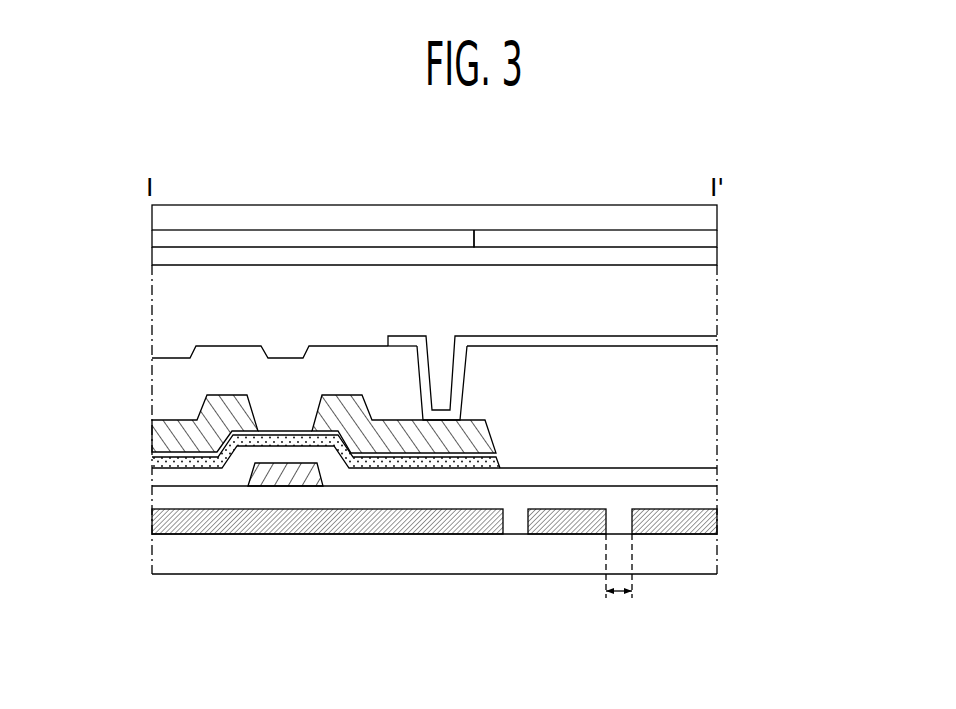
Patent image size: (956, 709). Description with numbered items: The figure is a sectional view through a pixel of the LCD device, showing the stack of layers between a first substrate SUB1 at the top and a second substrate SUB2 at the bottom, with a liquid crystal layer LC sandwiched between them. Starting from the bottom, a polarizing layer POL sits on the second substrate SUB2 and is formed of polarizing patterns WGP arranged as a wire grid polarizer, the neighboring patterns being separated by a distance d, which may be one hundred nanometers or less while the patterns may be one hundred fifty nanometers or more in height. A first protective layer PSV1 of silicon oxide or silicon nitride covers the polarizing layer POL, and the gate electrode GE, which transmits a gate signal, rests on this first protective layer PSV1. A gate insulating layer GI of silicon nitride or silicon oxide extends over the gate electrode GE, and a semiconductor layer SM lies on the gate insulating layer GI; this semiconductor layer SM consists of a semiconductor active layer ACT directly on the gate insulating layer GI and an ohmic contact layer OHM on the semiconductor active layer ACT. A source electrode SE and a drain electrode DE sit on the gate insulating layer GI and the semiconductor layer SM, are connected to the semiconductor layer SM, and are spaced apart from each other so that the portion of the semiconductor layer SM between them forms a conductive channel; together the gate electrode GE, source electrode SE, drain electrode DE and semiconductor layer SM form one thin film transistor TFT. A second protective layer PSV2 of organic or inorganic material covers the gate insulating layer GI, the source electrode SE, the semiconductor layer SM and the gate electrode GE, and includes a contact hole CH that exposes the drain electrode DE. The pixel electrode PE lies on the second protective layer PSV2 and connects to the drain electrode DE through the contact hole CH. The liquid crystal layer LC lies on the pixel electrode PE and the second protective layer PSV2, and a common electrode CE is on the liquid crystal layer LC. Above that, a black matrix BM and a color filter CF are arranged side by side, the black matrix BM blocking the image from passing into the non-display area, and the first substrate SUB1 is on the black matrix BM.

The first substrate SUB1 is at (152, 216).
The black matrix BM is at (152, 240).
The color filter CF is at (717, 239).
The common electrode CE is at (152, 259).
The liquid crystal layer LC is at (152, 341).
The pixel electrode PE is at (717, 341).
The contact hole CH is at (440, 338).
The second protective layer PSV2 is at (711, 397).
The thin film transistor TFT is at (326, 550).
The source electrode SE is at (186, 437).
The gate electrode GE is at (283, 478).
The drain electrode DE is at (481, 437).
The semiconductor layer SM is at (326, 547).
The semiconductor active layer ACT is at (364, 462).
The ohmic contact layer OHM is at (418, 454).
The gate insulating layer GI is at (715, 476).
The first protective layer PSV1 is at (715, 500).
The polarizing layer POL is at (474, 571).
The polarizing patterns WGP is at (567, 522).
The distance d is at (619, 578).
The second substrate SUB2 is at (717, 560).